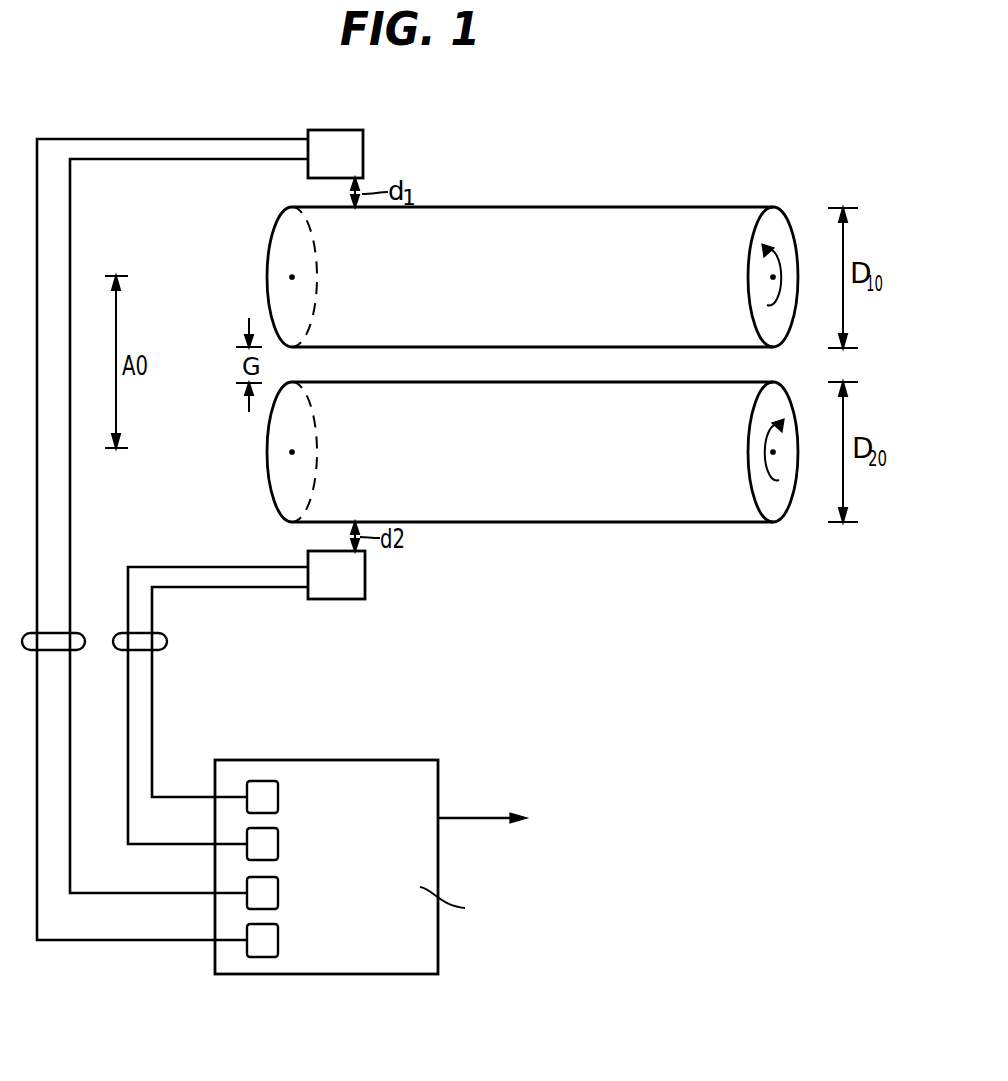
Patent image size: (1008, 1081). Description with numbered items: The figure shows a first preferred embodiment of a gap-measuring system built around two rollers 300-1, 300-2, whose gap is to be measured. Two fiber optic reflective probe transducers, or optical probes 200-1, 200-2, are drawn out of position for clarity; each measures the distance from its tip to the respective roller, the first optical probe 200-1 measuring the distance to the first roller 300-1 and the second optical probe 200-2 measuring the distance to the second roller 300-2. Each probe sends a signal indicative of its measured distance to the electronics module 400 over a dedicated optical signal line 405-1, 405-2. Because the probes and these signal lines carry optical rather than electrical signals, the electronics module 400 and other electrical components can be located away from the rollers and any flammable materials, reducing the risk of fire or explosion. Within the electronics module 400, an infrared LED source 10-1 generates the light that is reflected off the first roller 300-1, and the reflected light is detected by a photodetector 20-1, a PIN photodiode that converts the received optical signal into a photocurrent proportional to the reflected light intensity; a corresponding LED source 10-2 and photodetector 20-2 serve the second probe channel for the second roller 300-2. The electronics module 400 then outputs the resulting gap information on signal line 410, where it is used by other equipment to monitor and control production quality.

The optical probe 200-1 is at (366, 153).
The optical probe 200-2 is at (366, 573).
The roller 300-1 is at (751, 207).
The roller 300-2 is at (722, 523).
The optical signal line 405-1 is at (86, 640).
The optical signal line 405-2 is at (167, 642).
The electronics module 400 is at (377, 760).
The signal line 410 is at (472, 818).
The LED source 10-2 is at (279, 797).
The photodetector 20-2 is at (279, 844).
The LED source 10-1 is at (279, 893).
The photodetector 20-1 is at (279, 940).